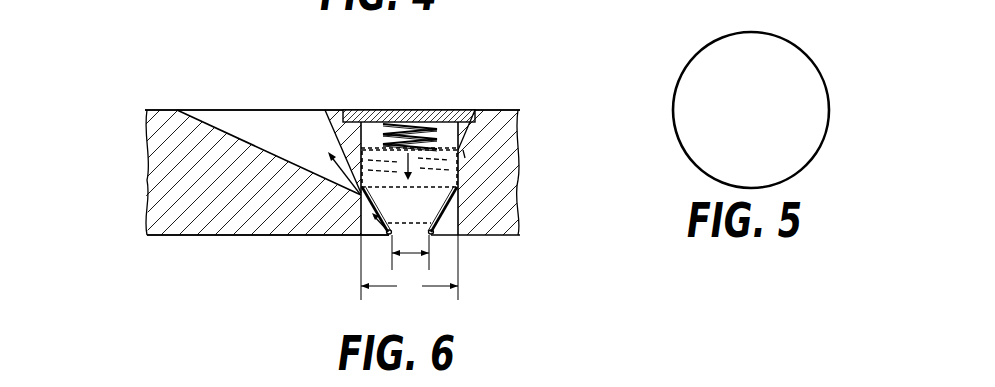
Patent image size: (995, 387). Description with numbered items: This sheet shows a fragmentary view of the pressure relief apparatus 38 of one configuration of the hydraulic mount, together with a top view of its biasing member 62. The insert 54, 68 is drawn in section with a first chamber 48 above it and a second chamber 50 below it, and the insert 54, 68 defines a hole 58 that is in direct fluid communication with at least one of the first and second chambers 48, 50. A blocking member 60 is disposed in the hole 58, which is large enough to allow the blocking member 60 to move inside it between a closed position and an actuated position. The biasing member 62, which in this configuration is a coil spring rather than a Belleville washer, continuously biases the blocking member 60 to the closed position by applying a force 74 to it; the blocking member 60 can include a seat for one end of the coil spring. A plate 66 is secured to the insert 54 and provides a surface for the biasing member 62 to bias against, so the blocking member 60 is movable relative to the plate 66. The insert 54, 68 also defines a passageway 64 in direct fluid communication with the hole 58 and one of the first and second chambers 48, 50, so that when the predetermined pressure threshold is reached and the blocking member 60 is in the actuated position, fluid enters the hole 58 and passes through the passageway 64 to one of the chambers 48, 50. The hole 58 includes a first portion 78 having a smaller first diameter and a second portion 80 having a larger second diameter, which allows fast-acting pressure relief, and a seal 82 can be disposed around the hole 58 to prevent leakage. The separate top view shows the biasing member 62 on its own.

In FIG. 6, the pressure relief apparatus 38 is at (320, 173).
In FIG. 6, the first chamber 48 is at (188, 90).
In FIG. 6, the second chamber 50 is at (188, 278).
In FIG. 6, the insert 54 is at (282, 185).
In FIG. 6, the insert 68 is at (163, 220).
In FIG. 6, the passageway 64 is at (228, 130).
In FIG. 6, the force 74 is at (445, 110).
In FIG. 6, the plate 66 is at (418, 110).
In FIG. 6, the blocking member 60 is at (368, 110).
In FIG. 6, the biasing member 62 is at (464, 157).
In FIG. 5, the biasing member 62 is at (808, 53).
In FIG. 6, the hole 58 is at (478, 167).
In FIG. 6, the first portion 78 is at (462, 197).
In FIG. 6, the second portion 80 is at (440, 232).
In FIG. 6, the seal 82 is at (435, 230).